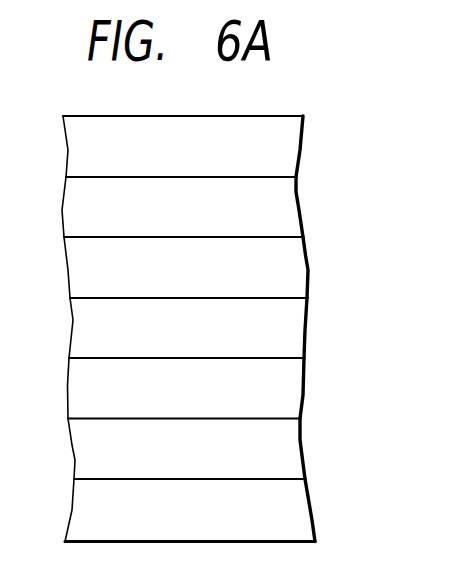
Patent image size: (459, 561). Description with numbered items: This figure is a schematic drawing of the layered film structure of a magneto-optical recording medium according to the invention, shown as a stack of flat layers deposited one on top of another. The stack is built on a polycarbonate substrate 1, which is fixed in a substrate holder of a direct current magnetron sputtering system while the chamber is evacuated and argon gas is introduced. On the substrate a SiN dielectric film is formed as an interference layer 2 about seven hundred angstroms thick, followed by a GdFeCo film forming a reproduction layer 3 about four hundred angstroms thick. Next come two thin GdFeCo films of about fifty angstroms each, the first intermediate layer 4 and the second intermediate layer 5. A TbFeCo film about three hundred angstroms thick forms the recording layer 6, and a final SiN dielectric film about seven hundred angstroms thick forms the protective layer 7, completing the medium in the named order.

The polycarbonate substrate 1 is at (293, 152).
The interference layer 2 is at (293, 217).
The reproduction layer 3 is at (300, 273).
The first intermediate layer 4 is at (298, 335).
The second intermediate layer 5 is at (297, 392).
The recording layer 6 is at (300, 455).
The protective layer 7 is at (300, 515).